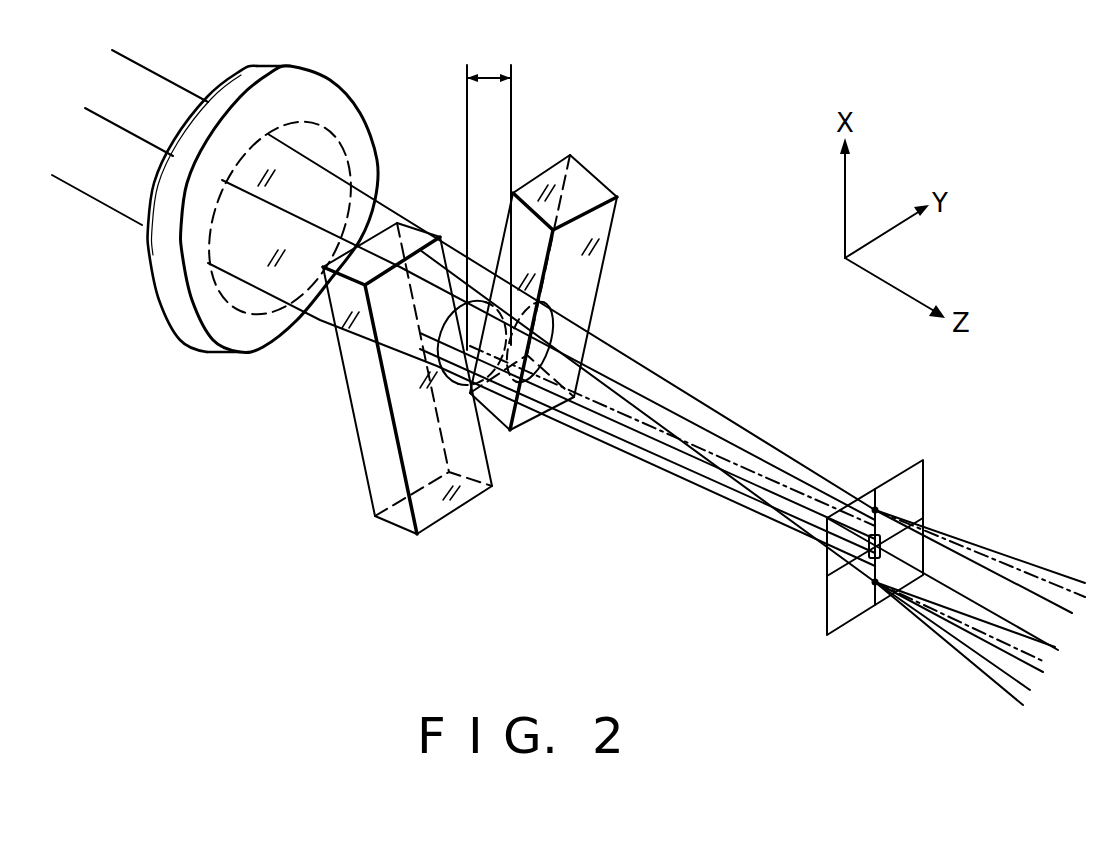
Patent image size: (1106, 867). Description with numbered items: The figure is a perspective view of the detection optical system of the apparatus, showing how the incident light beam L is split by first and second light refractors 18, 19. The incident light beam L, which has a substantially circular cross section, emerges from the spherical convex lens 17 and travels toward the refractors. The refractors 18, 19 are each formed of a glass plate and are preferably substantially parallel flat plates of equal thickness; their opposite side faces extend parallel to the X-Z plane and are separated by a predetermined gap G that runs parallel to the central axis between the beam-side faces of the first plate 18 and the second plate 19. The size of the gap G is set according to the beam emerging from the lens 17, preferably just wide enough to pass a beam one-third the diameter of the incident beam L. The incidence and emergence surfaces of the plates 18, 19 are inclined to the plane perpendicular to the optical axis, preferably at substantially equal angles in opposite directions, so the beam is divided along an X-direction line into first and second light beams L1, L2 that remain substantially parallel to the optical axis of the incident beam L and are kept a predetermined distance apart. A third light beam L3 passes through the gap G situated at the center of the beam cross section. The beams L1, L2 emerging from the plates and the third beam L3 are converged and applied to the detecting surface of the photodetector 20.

The spherical convex lens 17 is at (302, 73).
The first light refractor (first parallel flat plate) 18 is at (365, 445).
The second light refractor (second parallel flat plate) 19 is at (593, 187).
The photodetector 20 is at (923, 490).
The incident light beam L is at (170, 83).
The gap G is at (489, 195).
The first light beam L1 is at (793, 473).
The second light beam L2 is at (790, 523).
The third light beam L3 is at (872, 533).